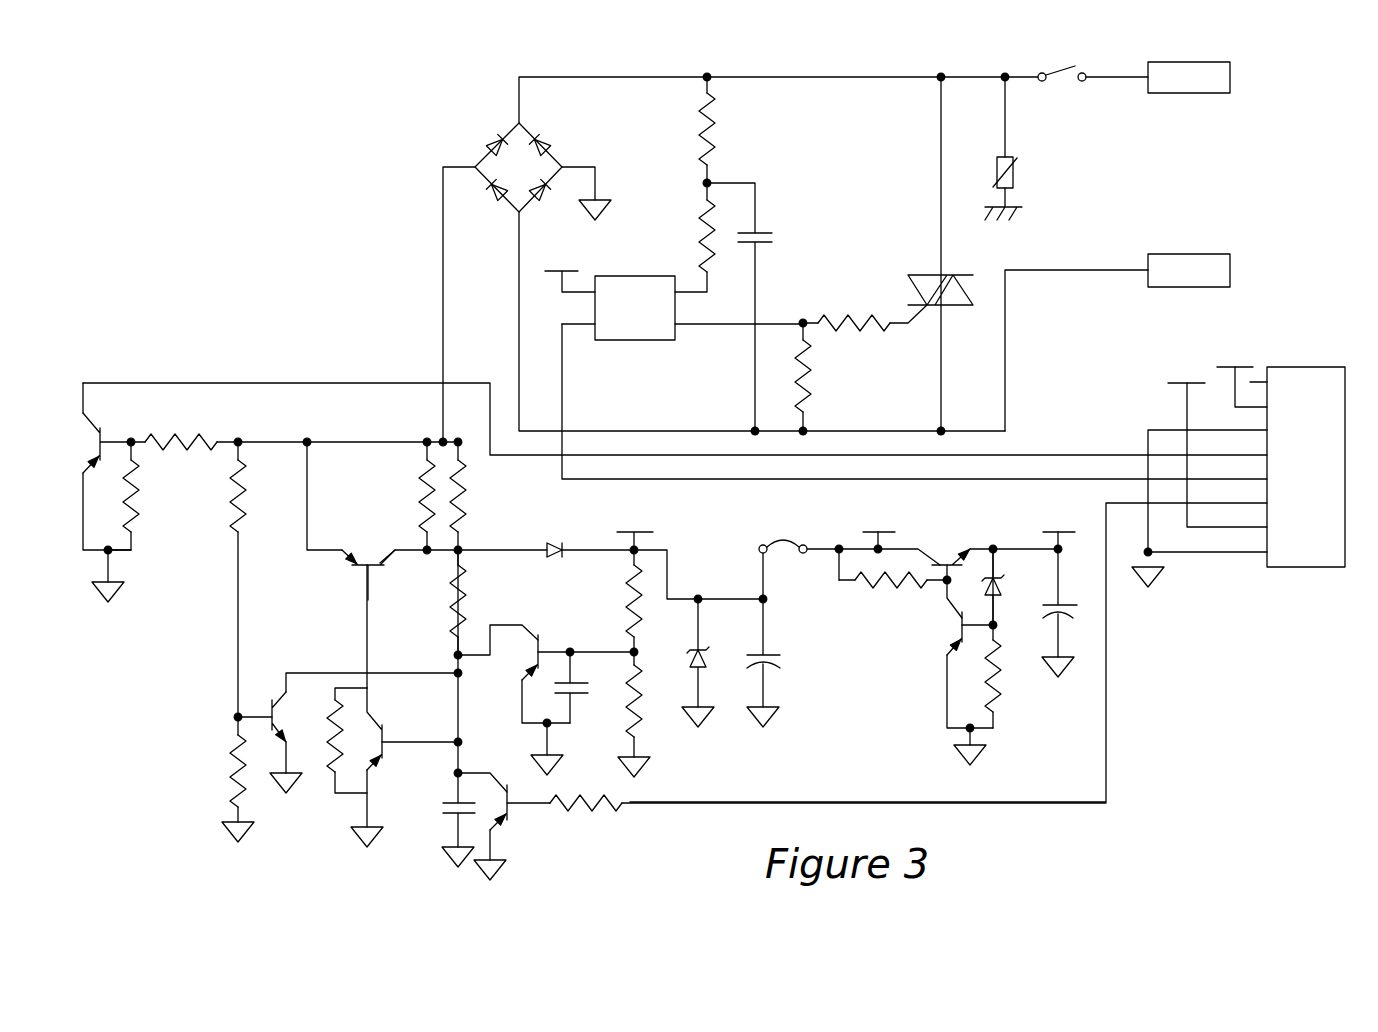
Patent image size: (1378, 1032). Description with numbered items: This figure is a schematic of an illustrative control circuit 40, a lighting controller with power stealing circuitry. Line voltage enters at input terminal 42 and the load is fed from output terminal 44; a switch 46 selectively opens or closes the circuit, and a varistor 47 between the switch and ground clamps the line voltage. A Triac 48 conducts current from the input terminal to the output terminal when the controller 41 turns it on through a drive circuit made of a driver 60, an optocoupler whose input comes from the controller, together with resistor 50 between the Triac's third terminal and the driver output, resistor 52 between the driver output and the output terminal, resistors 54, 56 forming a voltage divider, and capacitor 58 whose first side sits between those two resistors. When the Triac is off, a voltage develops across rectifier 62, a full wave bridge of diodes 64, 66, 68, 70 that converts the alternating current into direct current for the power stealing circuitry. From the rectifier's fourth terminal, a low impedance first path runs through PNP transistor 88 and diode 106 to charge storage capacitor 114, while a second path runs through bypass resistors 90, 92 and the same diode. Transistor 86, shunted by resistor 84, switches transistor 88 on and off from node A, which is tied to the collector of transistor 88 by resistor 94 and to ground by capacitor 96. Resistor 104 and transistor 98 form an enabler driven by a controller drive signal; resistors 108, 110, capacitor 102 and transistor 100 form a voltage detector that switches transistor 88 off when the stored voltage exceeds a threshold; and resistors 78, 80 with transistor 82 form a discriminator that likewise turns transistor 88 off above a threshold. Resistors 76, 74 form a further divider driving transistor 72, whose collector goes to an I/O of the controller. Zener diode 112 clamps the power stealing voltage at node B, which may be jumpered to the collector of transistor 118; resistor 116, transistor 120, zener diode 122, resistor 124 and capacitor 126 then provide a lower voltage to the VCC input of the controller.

The control circuit 40 is at (278, 145).
The controller 41 is at (1305, 367).
The input terminal 42 is at (1190, 93).
The output terminal 44 is at (1190, 254).
The switch 46 is at (1068, 80).
The varistor 47 is at (1013, 170).
The Triac 48 is at (930, 272).
The resistor 50 is at (852, 316).
The resistor 52 is at (810, 372).
The resistor 54 is at (702, 120).
The resistor 56 is at (702, 230).
The capacitor 58 is at (762, 232).
The driver 60 is at (635, 340).
The rectifier 62 is at (494, 113).
The diode 64 is at (545, 140).
The diode 66 is at (543, 198).
The diode 68 is at (488, 194).
The diode 70 is at (493, 140).
The transistor 72 is at (98, 428).
The resistor 74 is at (135, 492).
The resistor 76 is at (196, 440).
The resistor 78 is at (240, 492).
The resistor 80 is at (234, 770).
The transistor 82 is at (272, 693).
The resistor 84 is at (335, 730).
The transistor 86 is at (383, 730).
The transistor 88 is at (364, 561).
The bypass resistor 90 is at (422, 490).
The bypass resistor 92 is at (462, 490).
The resistor 94 is at (456, 622).
The capacitor 96 is at (445, 822).
The transistor 98 is at (505, 820).
The transistor 100 is at (528, 665).
The capacitor 102 is at (578, 695).
The resistor 104 is at (592, 810).
The diode 106 is at (550, 540).
The resistor 108 is at (630, 618).
The resistor 110 is at (645, 725).
The zener diode 112 is at (700, 652).
The charge storage capacitor 114 is at (780, 660).
The resistor 116 is at (870, 585).
The transistor 118 is at (945, 561).
The transistor 120 is at (957, 625).
The zener diode 122 is at (1000, 585).
The resistor 124 is at (996, 703).
The capacitor 126 is at (1080, 612).